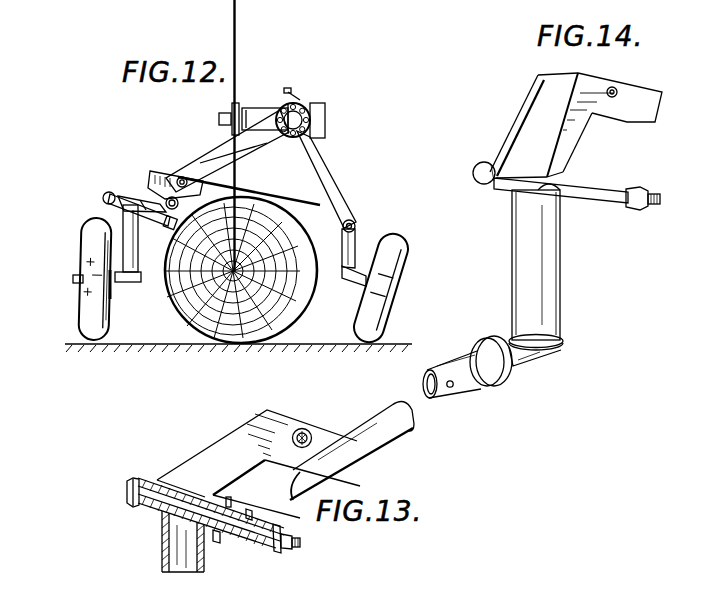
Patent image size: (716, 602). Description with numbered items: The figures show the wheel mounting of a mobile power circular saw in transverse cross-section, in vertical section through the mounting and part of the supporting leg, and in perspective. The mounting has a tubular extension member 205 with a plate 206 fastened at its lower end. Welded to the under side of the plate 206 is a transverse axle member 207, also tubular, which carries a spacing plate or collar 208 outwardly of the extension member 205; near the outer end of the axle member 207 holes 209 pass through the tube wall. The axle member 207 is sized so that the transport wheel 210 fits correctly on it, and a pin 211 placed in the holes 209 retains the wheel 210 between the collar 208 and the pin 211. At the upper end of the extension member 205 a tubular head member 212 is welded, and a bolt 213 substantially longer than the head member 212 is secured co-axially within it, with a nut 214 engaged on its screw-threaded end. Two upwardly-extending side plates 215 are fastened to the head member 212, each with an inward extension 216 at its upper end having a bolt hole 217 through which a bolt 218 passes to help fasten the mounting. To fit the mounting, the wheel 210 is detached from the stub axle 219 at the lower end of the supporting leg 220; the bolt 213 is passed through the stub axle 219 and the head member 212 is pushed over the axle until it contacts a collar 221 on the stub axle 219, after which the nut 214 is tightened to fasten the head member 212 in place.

In FIG. 12, the tubular extension member 205 is at (140, 286).
In FIG. 14, the tubular extension member 205 is at (560, 250).
In FIG. 13, the tubular extension member 205 is at (162, 552).
In FIG. 14, the plate 206 is at (561, 339).
In FIG. 12, the transverse axle member 207 is at (128, 289).
In FIG. 14, the transverse axle member 207 is at (533, 364).
In FIG. 12, the spacing plate or collar 208 is at (107, 274).
In FIG. 14, the spacing plate or collar 208 is at (482, 337).
In FIG. 14, the holes 209 is at (454, 388).
In FIG. 12, the transport wheel 210 is at (87, 268).
In FIG. 12, the pin 211 is at (75, 280).
In FIG. 12, the tubular head member 212 is at (108, 193).
In FIG. 14, the tubular head member 212 is at (477, 165).
In FIG. 13, the tubular head member 212 is at (155, 480).
In FIG. 14, the bolt 213 is at (610, 191).
In FIG. 13, the bolt 213 is at (148, 513).
In FIG. 14, the nut 214 is at (637, 189).
In FIG. 13, the nut 214 is at (280, 551).
In FIG. 12, the side plates 215 is at (150, 177).
In FIG. 14, the side plates 215 is at (527, 137).
In FIG. 13, the side plates 215 is at (237, 438).
In FIG. 14, the inward extension 216 is at (647, 108).
In FIG. 13, the inward extension 216 is at (338, 437).
In FIG. 14, the bolt hole 217 is at (563, 91).
In FIG. 12, the bolt 218 is at (181, 178).
In FIG. 13, the bolt 218 is at (302, 430).
In FIG. 12, the stub axle 219 is at (120, 207).
In FIG. 13, the stub axle 219 is at (250, 544).
In FIG. 12, the supporting leg 220 is at (223, 163).
In FIG. 13, the supporting leg 220 is at (393, 410).
In FIG. 12, the collar 221 is at (150, 309).